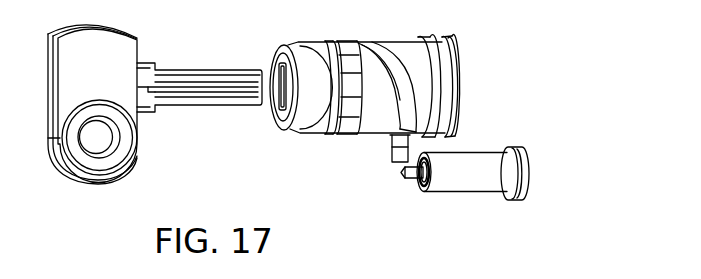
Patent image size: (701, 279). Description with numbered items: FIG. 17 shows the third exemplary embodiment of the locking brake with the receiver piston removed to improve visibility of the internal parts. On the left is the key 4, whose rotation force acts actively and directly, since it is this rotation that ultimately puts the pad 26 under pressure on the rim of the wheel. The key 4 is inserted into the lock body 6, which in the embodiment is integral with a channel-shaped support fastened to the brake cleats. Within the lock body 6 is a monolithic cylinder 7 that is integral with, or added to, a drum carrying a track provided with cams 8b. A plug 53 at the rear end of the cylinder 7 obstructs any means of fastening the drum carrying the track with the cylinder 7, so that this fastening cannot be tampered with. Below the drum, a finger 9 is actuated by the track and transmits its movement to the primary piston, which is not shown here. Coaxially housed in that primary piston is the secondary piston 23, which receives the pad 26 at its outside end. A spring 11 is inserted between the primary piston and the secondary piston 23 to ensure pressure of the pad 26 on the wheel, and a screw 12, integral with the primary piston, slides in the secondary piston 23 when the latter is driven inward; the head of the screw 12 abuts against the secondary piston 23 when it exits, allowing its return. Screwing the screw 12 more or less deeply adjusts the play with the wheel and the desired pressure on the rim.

The key 4 is at (102, 86).
The lock body 6 is at (302, 42).
The cylinder 7 is at (268, 104).
The cams 8b is at (381, 44).
The plug 53 is at (457, 63).
The finger 9 is at (392, 152).
The screw 12 is at (402, 173).
The spring 11 is at (418, 183).
The secondary piston 23 is at (480, 160).
The pad 26 is at (530, 178).